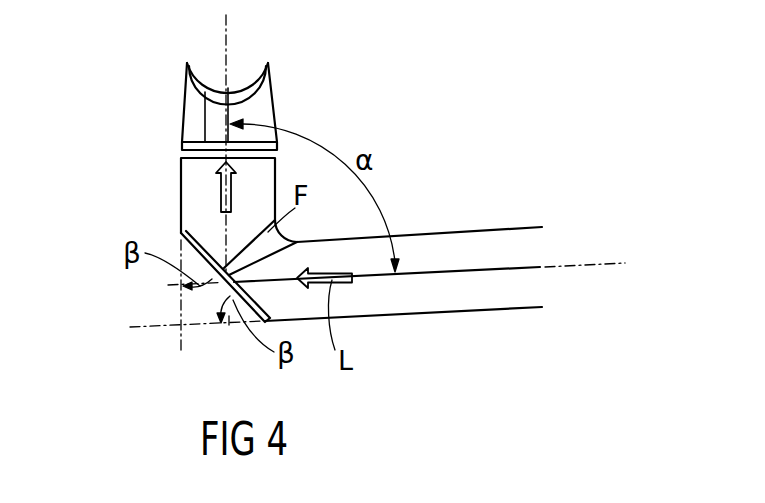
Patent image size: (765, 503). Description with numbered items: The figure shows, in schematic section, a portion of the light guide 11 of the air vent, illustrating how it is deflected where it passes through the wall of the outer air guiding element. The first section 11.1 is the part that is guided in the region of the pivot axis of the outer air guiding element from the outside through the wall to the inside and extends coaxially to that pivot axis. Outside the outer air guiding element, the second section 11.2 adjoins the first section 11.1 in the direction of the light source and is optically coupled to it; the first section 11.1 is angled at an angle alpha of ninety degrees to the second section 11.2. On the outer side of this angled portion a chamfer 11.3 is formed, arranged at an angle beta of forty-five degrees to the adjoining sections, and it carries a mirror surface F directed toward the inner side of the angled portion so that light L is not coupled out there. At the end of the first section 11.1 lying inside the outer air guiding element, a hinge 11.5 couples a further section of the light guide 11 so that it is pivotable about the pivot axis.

The light guide 11 is at (159, 198).
The first section 11.1 is at (187, 166).
The second section 11.2 is at (512, 310).
The chamfer 11.3 is at (223, 278).
The hinge 11.5 is at (275, 92).